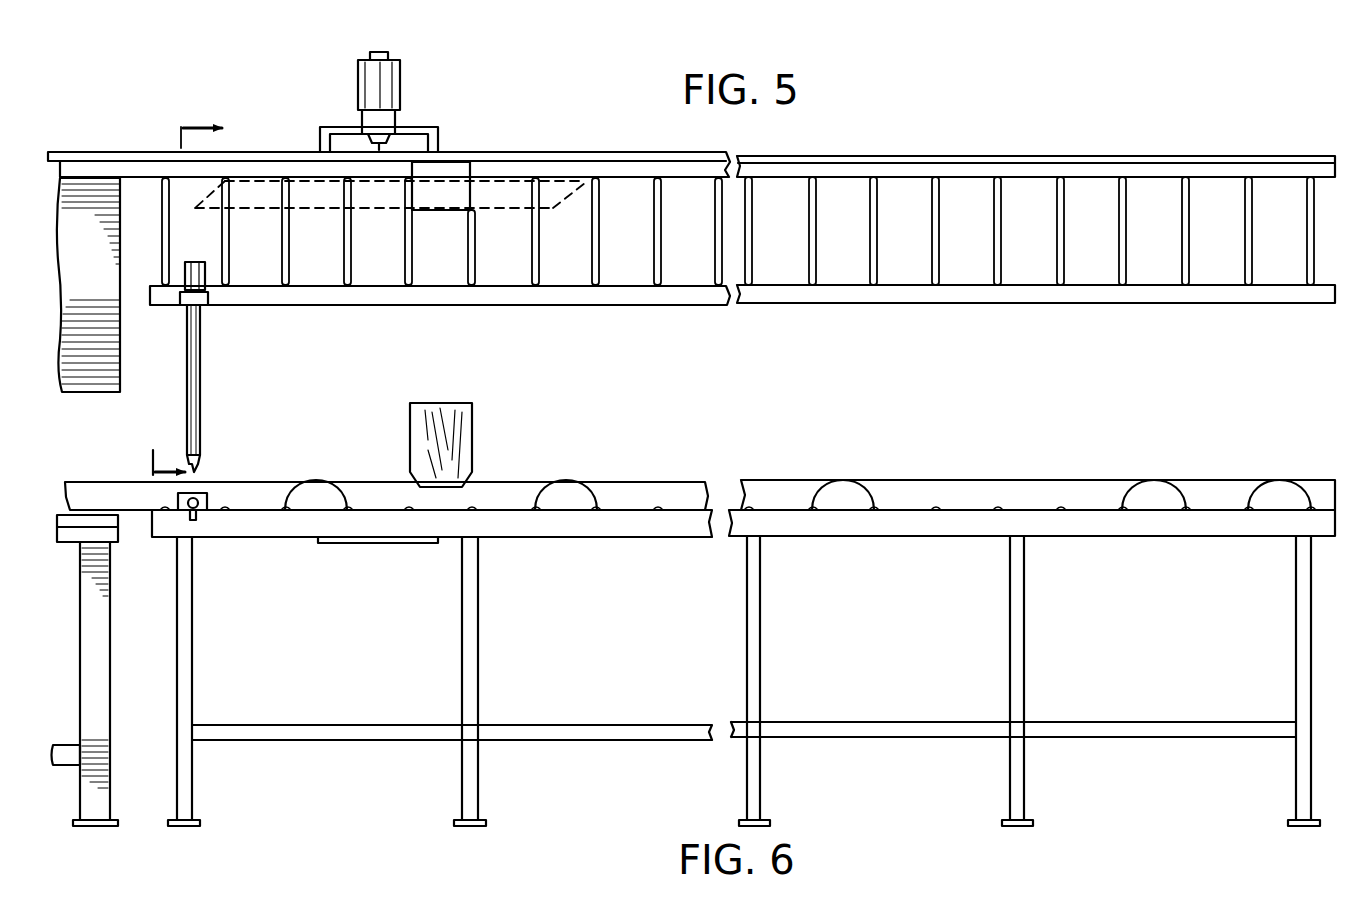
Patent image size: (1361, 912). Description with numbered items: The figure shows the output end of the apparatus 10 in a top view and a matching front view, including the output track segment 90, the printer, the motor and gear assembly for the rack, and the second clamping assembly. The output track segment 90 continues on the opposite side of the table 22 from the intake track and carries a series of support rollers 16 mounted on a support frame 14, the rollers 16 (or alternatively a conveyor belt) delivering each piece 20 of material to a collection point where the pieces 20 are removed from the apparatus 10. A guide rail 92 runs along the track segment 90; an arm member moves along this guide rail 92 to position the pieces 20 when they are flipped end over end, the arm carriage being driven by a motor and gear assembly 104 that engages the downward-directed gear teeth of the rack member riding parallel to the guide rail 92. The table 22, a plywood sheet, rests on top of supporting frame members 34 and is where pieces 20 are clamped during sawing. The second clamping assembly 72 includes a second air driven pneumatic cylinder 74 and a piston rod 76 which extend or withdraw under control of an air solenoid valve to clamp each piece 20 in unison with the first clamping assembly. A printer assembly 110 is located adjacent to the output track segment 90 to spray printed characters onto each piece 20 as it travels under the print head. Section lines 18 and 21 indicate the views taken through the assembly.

In FIG. 5, the apparatus 10 is at (888, 156).
In FIG. 6, the support frame 14 is at (192, 673).
In FIG. 5, the support rollers 16 is at (1307, 240).
In FIG. 6, the support rollers 16 is at (1308, 500).
In FIG. 5, the section line 18 is at (362, 25).
In FIG. 5, the pieces of material 20 is at (553, 206).
In FIG. 6, the section line 21 is at (397, 495).
In FIG. 5, the table 22 is at (100, 296).
In FIG. 6, the supporting frame members 34 is at (110, 690).
In FIG. 5, the second clamping assembly 72 is at (200, 410).
In FIG. 6, the second clamping assembly 72 is at (200, 492).
In FIG. 5, the second air driven pneumatic cylinder 74 is at (200, 352).
In FIG. 5, the piston rod 76 is at (185, 298).
In FIG. 5, the output track segment 90 is at (626, 305).
In FIG. 6, the output track segment 90 is at (618, 537).
In FIG. 5, the guide rail 92 is at (692, 177).
In FIG. 6, the guide rail 92 is at (665, 487).
In FIG. 5, the motor and gear assembly 104 is at (400, 96).
In FIG. 5, the printer assembly 110 is at (458, 198).
In FIG. 6, the printer assembly 110 is at (472, 418).